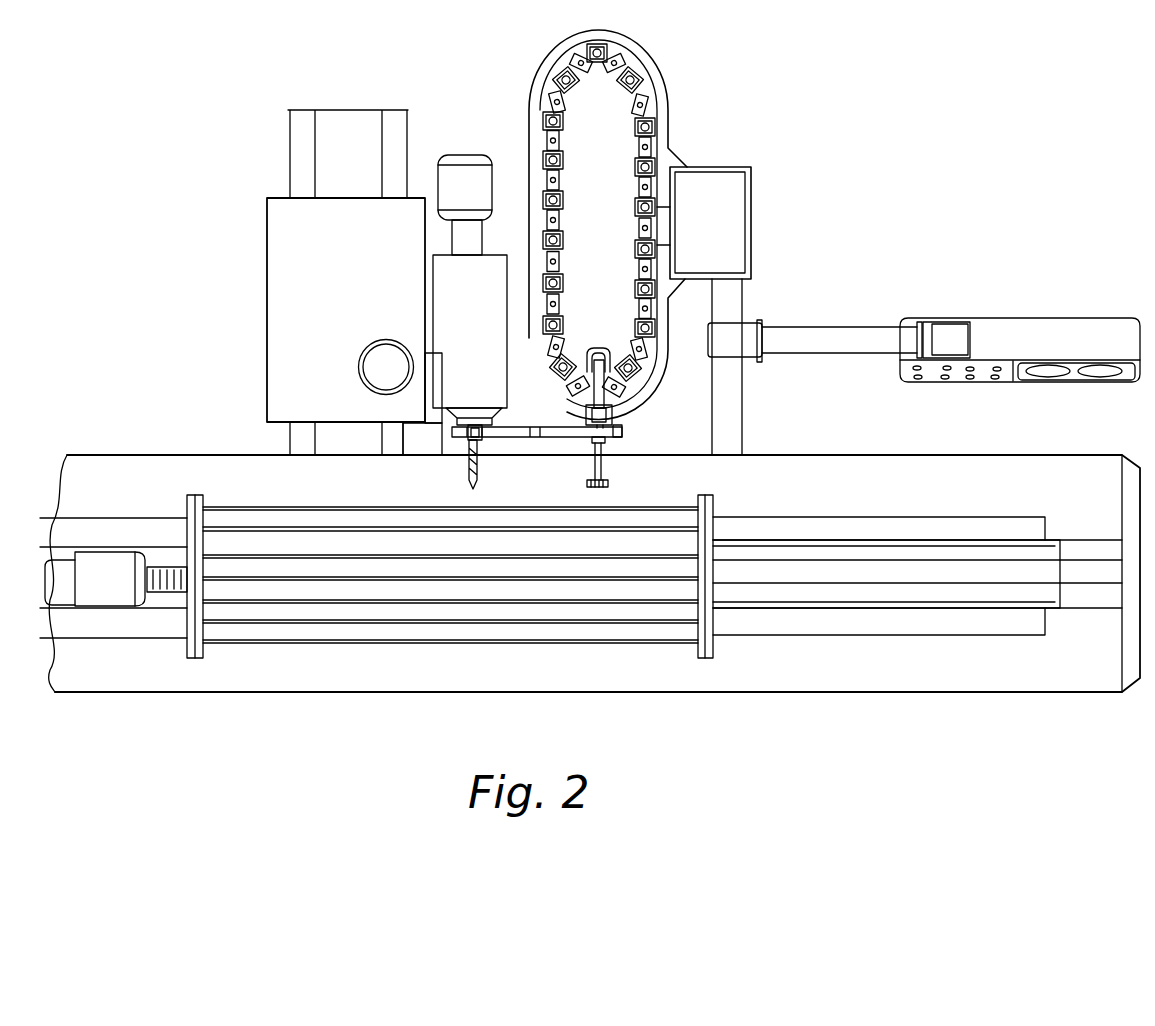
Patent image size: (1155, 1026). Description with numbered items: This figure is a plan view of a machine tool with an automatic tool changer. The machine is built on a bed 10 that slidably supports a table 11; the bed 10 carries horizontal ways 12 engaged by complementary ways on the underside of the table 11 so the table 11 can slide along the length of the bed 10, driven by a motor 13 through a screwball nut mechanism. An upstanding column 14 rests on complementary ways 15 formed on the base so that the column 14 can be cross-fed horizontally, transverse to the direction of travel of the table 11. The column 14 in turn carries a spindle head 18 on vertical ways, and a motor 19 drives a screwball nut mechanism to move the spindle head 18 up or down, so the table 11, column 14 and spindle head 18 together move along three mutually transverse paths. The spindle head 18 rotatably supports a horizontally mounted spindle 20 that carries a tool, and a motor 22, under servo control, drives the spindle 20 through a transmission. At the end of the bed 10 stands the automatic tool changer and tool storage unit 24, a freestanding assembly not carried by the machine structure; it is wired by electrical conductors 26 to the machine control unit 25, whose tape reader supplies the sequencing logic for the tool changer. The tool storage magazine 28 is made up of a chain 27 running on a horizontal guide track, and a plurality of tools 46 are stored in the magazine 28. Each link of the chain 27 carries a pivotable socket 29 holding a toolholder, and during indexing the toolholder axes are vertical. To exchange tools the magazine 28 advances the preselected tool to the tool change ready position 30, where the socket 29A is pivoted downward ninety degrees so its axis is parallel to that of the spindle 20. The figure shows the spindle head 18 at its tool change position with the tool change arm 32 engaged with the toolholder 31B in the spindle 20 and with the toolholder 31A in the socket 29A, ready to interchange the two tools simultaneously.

The bed 10 is at (1018, 682).
The table 11 is at (243, 633).
The horizontal ways 12 is at (1033, 622).
The motor 13 is at (103, 570).
The column 14 is at (278, 290).
The complementary ways 15 is at (393, 118).
The spindle head 18 is at (483, 272).
The motor 19 is at (378, 367).
The spindle 20 is at (480, 422).
The motor 22 is at (460, 177).
The automatic tool changer and tool storage unit 24 is at (676, 143).
The machine control unit 25 is at (1002, 327).
The electrical conductors 26 is at (790, 335).
The chain 27 is at (552, 92).
The tool storage magazine 28 is at (663, 98).
The pivotable socket 29 is at (617, 380).
The socket 29A is at (627, 414).
The tool change ready position 30 is at (611, 443).
The toolholder 31A is at (620, 432).
The toolholder 31B is at (466, 441).
The tool change arm 32 is at (563, 433).
The tools 46 is at (607, 48).